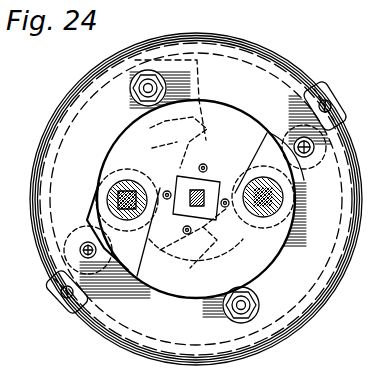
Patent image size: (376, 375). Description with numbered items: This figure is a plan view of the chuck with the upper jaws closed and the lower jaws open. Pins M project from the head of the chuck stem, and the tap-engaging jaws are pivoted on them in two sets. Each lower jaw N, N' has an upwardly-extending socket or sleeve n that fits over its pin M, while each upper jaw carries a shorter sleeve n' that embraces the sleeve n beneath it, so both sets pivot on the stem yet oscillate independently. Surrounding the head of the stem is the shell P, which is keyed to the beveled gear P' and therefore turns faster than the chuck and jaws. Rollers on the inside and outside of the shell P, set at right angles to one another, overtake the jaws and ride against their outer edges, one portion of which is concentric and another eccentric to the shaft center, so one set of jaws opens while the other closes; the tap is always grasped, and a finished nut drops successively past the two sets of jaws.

The shell P is at (193, 172).
The beveled gear P' is at (258, 296).
The jaw N is at (164, 158).
The jaw N' is at (165, 229).
The pin M is at (116, 196).
The socket or sleeve n is at (178, 203).
The socket or sleeve n' is at (263, 189).